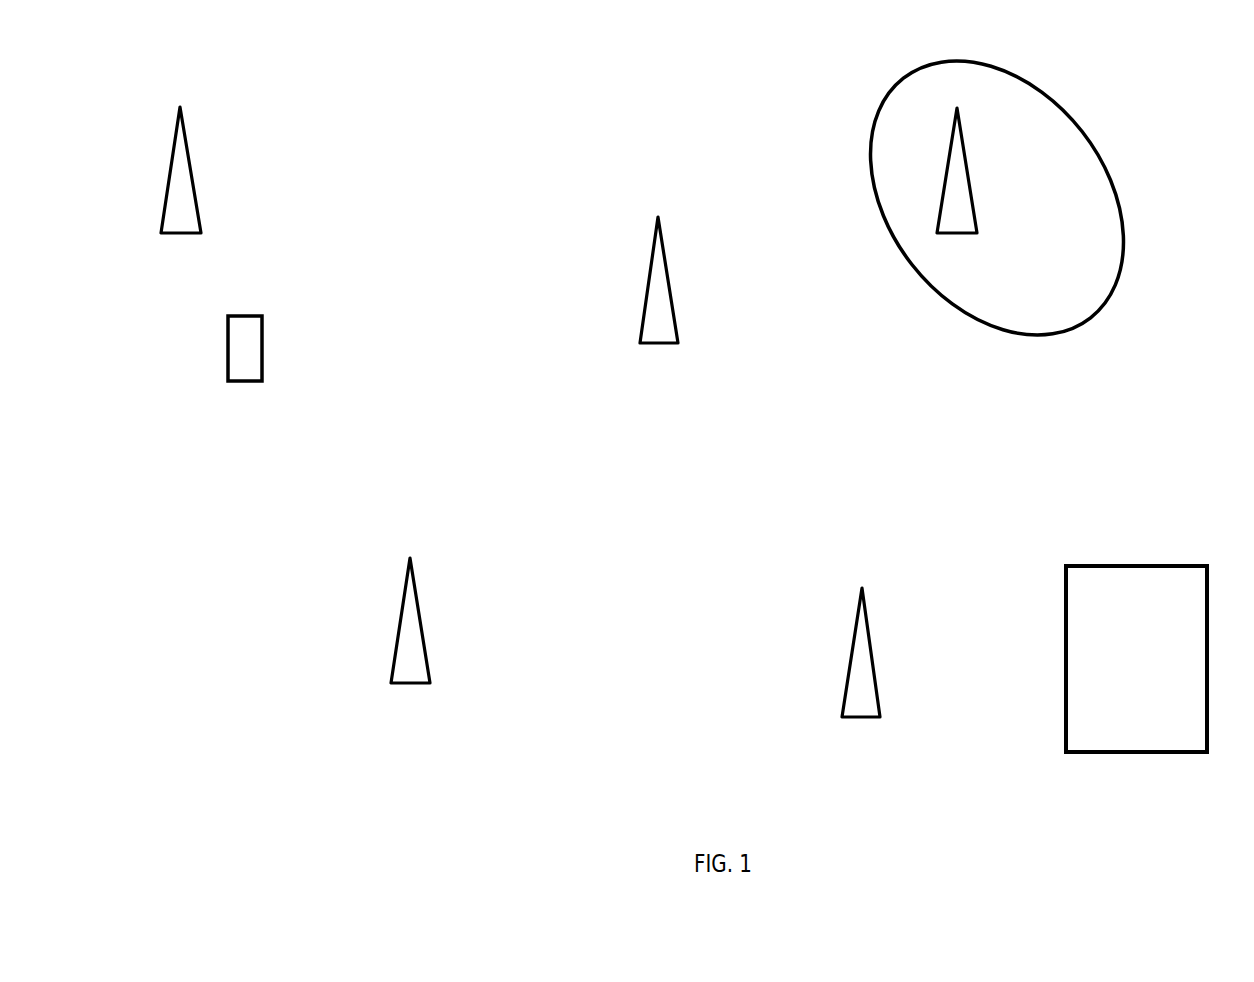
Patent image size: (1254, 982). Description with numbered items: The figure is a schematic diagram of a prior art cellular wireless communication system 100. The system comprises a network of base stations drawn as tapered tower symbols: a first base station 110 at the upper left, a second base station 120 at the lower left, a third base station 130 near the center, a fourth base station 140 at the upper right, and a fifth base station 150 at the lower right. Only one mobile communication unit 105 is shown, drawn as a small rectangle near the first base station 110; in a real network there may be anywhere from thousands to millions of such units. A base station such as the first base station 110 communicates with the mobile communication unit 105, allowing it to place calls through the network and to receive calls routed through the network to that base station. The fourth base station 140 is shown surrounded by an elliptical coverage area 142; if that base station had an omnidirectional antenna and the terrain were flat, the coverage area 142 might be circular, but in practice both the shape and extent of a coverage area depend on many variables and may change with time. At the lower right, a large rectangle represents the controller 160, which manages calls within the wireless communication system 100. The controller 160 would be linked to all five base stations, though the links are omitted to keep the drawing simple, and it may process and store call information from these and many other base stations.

The wireless communication system 100 is at (565, 102).
The mobile communication unit 105 is at (263, 350).
The base station BS1 110 is at (197, 172).
The base station BS2 120 is at (420, 599).
The base station BS3 130 is at (645, 270).
The base station BS4 140 is at (937, 158).
The coverage area 142 is at (1102, 158).
The base station BS5 150 is at (852, 637).
The controller 160 is at (1065, 635).